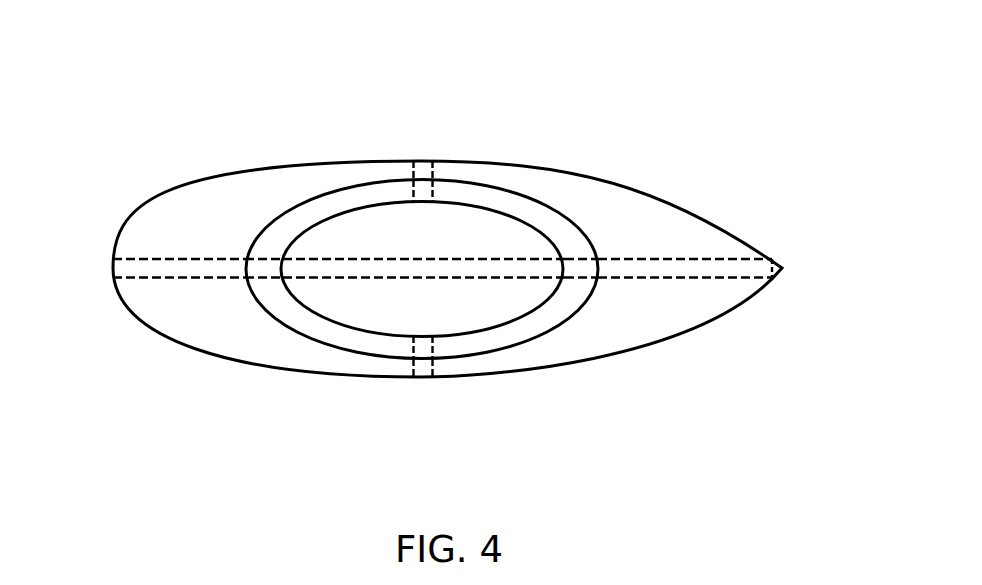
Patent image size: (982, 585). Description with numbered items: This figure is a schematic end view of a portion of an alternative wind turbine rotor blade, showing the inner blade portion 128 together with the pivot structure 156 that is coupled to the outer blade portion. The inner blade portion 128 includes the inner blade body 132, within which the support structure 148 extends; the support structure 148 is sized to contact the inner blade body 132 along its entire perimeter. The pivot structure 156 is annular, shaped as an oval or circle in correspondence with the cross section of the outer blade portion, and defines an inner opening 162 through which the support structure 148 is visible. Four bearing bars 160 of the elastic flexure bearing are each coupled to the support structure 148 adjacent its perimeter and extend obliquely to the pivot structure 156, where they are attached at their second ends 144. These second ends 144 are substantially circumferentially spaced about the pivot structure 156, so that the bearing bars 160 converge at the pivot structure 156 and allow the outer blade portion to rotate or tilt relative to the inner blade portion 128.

The inner blade portion 128 is at (686, 68).
The inner blade body 132 is at (205, 188).
The bearing second end 144 is at (417, 190).
The support structure 148 is at (333, 245).
The pivot structure 156 is at (537, 320).
The bearing bars 160 is at (427, 183).
The inner opening 162 is at (483, 230).